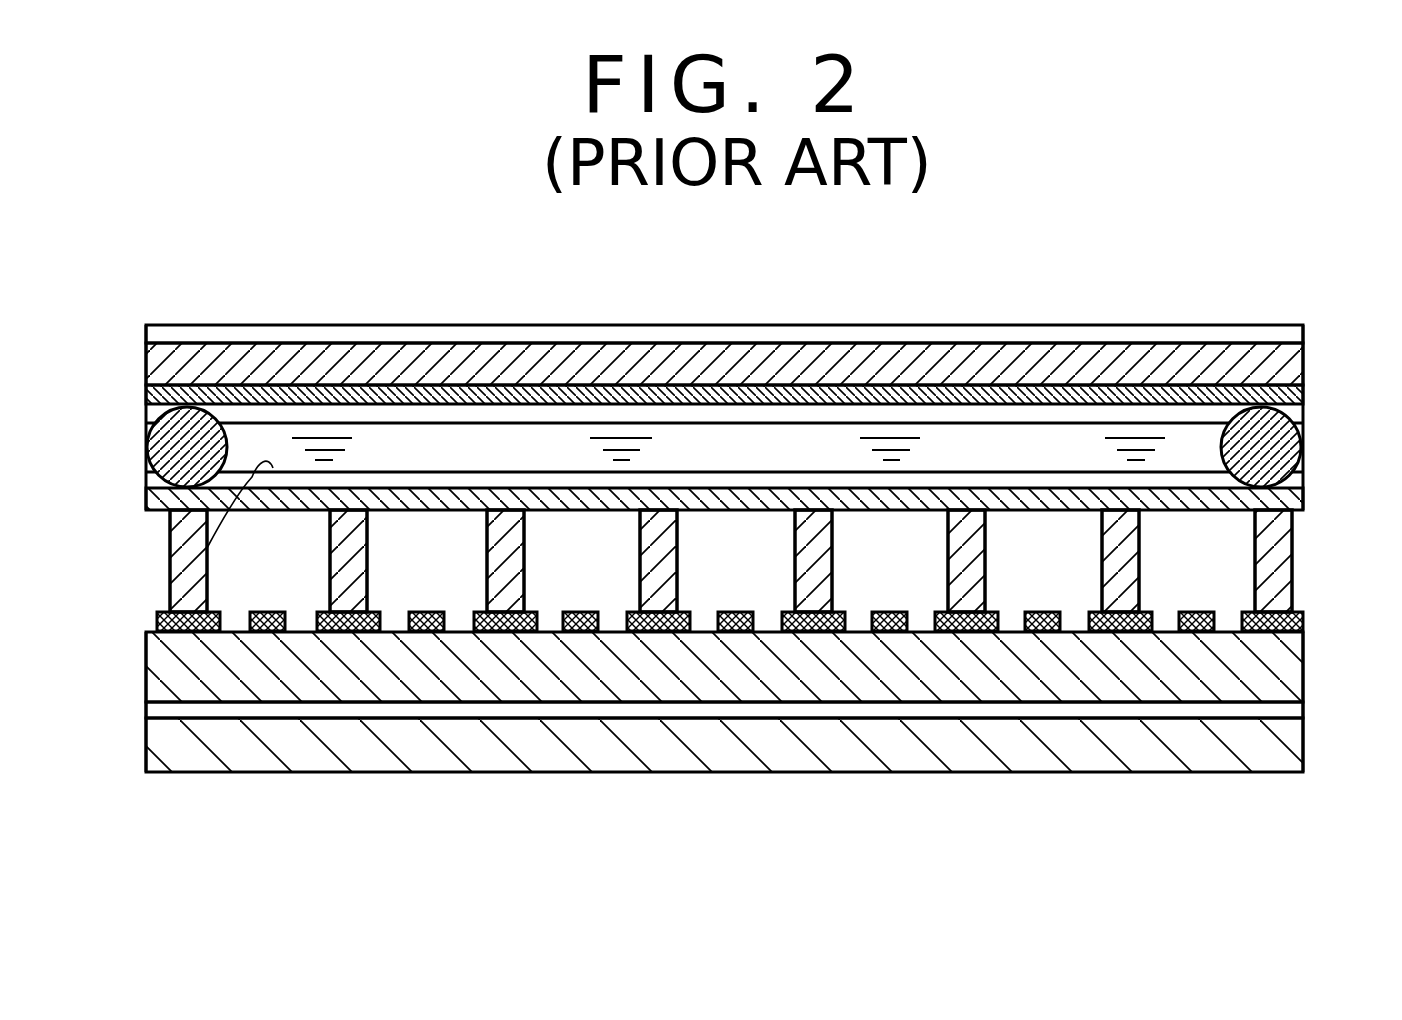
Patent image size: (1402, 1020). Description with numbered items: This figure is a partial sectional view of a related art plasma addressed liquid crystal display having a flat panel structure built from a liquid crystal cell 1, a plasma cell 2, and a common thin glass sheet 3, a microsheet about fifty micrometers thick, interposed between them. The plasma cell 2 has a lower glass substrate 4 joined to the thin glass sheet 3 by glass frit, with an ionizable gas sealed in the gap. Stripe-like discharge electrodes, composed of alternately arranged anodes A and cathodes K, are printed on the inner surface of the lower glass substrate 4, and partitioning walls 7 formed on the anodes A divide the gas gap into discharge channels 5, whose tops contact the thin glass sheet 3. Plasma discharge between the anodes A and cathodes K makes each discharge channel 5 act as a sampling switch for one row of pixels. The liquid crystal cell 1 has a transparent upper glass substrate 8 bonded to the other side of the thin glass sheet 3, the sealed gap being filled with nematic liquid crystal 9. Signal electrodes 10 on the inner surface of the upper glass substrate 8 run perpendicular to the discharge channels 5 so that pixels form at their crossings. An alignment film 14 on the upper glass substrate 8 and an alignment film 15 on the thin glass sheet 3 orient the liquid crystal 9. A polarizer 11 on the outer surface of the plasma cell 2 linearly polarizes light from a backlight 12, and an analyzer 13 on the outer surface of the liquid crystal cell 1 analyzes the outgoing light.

The liquid crystal cell 1 is at (1312, 325).
The plasma cell 2 is at (1312, 512).
The thin glass sheet 3 is at (1303, 498).
The lower glass substrate 4 is at (1003, 675).
The discharge channel 5 is at (1202, 575).
The partitioning wall 7 is at (679, 550).
The upper glass substrate 8 is at (824, 358).
The liquid crystal 9 is at (472, 447).
The signal electrode 10 is at (578, 388).
The polarizer 11 is at (923, 710).
The backlight 12 is at (830, 755).
The analyzer 13 is at (1097, 334).
The alignment film 14 is at (246, 428).
The alignment film 15 is at (170, 540).
The anode A is at (352, 632).
The cathode K is at (272, 613).